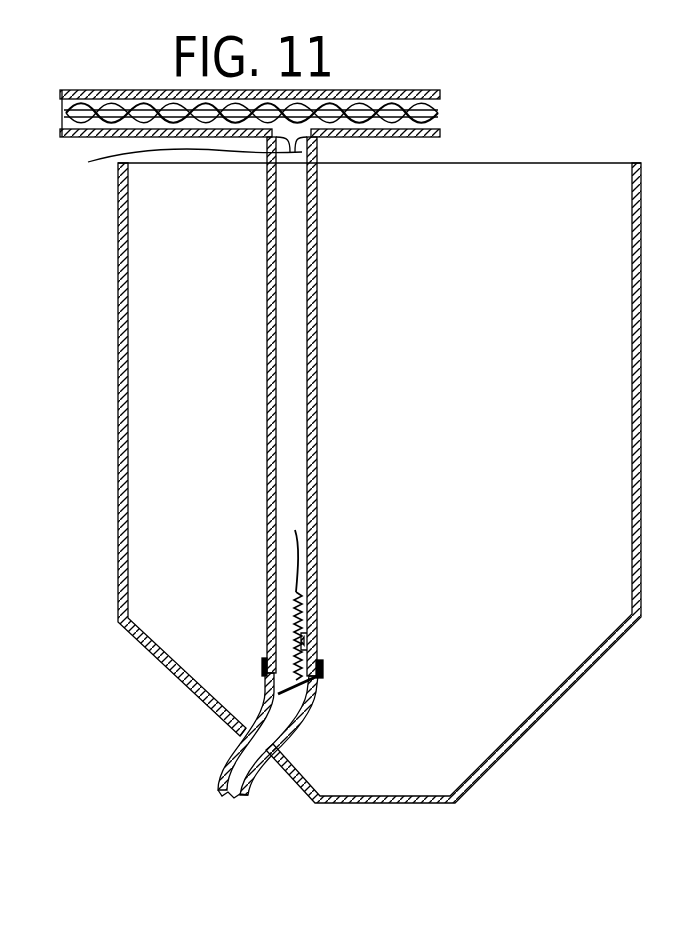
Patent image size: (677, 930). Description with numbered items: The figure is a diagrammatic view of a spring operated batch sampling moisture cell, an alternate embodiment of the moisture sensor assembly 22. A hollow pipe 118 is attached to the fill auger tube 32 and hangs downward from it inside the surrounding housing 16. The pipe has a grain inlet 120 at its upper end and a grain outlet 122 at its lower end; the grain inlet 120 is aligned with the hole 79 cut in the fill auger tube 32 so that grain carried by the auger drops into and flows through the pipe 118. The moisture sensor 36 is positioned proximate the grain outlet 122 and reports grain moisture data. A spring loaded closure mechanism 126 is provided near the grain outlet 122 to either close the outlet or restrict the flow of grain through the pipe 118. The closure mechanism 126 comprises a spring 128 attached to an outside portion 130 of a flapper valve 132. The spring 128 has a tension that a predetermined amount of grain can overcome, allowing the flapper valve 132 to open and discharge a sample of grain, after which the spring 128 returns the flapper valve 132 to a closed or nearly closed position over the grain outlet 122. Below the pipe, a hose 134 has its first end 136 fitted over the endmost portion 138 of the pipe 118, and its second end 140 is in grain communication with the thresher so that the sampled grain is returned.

The fill auger tube 32 is at (150, 90).
The hole 79 is at (178, 162).
The grain inlet 120 is at (314, 152).
The hopper 16 is at (533, 193).
The hollow pipe 118 is at (287, 346).
The outside portion 130 is at (295, 530).
The spring 128 is at (330, 599).
The moisture sensor 36 is at (308, 644).
The moisture sensor assembly 22 is at (352, 607).
The spring loaded closure mechanism 126 is at (240, 586).
The endmost portion 138 is at (266, 660).
The grain outlet 122 is at (324, 677).
The flapper valve 132 is at (300, 690).
The first end 136 is at (266, 672).
The hose 134 is at (290, 746).
The second end 140 is at (250, 797).